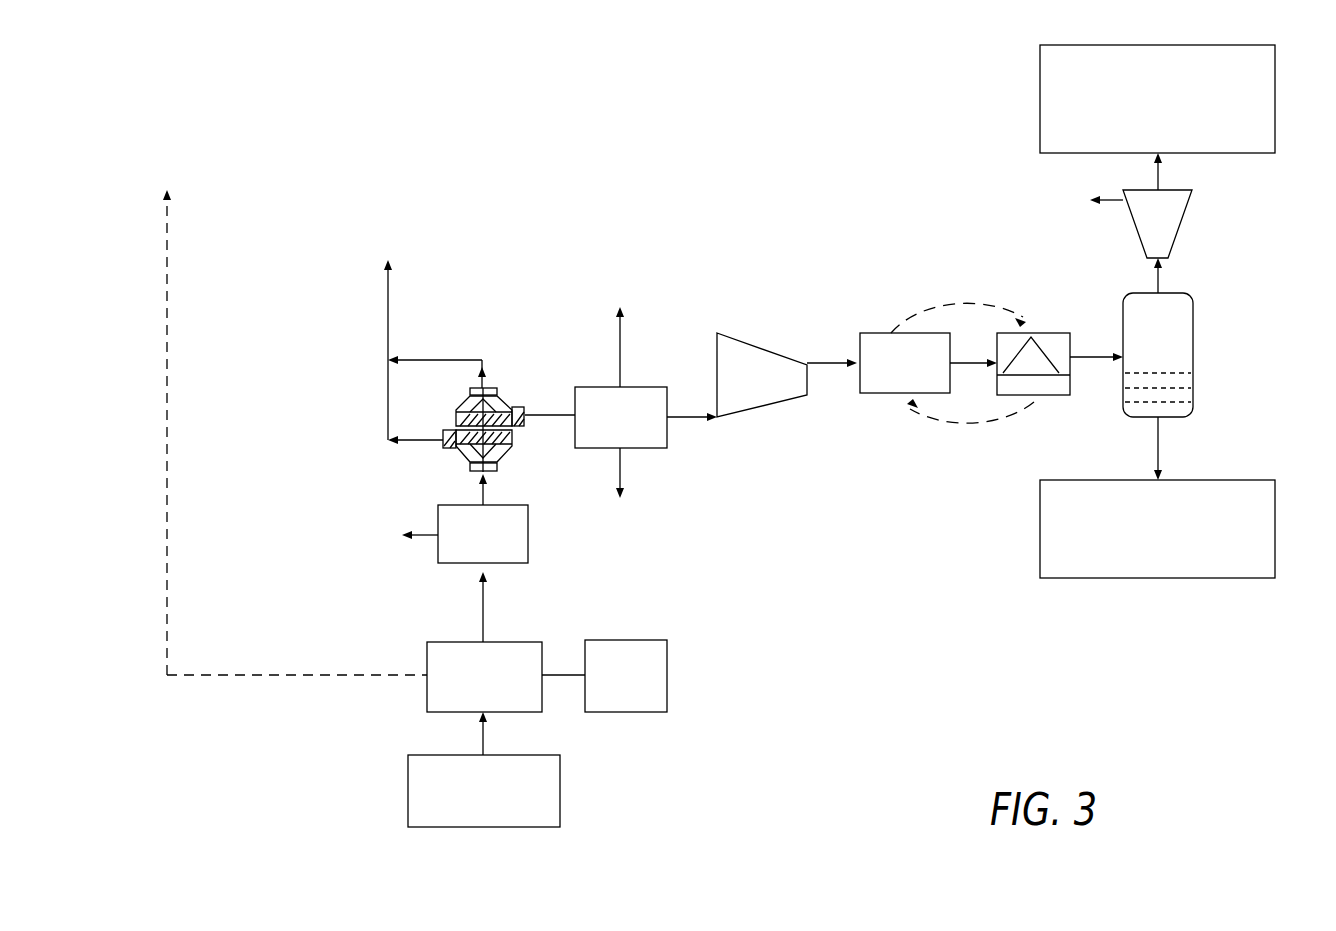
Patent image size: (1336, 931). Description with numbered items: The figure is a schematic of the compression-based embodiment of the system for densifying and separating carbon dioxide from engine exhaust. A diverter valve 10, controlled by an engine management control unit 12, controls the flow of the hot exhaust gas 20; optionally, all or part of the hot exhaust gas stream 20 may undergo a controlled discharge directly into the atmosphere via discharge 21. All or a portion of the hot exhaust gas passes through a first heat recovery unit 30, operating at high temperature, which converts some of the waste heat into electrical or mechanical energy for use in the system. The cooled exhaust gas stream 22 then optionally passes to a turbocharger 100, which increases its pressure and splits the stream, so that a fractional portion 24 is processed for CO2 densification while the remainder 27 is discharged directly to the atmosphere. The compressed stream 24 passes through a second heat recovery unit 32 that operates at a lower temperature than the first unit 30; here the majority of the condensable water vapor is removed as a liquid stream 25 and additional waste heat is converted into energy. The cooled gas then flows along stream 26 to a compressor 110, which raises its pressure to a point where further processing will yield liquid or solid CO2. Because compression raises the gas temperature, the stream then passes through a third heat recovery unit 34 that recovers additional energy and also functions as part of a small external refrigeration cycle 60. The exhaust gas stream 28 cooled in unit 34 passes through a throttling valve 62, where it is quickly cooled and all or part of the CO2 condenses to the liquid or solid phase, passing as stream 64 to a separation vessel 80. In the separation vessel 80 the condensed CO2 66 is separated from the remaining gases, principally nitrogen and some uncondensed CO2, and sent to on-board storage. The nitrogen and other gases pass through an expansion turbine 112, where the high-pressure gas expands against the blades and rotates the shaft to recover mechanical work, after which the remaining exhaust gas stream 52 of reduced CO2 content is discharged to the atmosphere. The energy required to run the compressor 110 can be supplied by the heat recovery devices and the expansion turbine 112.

The diverter valve 10 is at (525, 700).
The engine management control unit 12 is at (637, 680).
The hot exhaust gas stream 20 is at (485, 620).
The discharge 21 is at (282, 432).
The cooled exhaust gas stream 22 is at (490, 493).
The fractional portion 24 is at (545, 415).
The liquid stream 25 is at (622, 480).
The compressor inlet stream 26 is at (690, 420).
The remainder 27 is at (390, 307).
The exhaust gas stream 28 is at (965, 356).
The first heat recovery unit 30 is at (528, 535).
The second heat recovery unit 32 is at (635, 387).
The third heat recovery unit 34 is at (872, 333).
The remaining exhaust gas stream 52 is at (1165, 183).
The external refrigeration cycle 60 is at (976, 420).
The throttling valve 62 is at (1015, 372).
The stream 64 is at (1093, 358).
The condensed CO2 66 is at (1162, 440).
The separation vessel 80 is at (1180, 341).
The turbocharger 100 is at (463, 405).
The compressor 110 is at (790, 396).
The expansion turbine 112 is at (1164, 255).